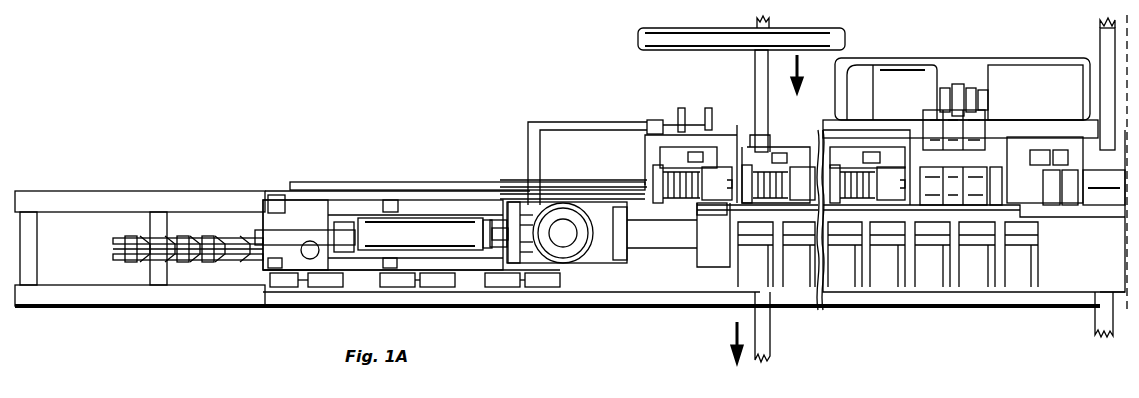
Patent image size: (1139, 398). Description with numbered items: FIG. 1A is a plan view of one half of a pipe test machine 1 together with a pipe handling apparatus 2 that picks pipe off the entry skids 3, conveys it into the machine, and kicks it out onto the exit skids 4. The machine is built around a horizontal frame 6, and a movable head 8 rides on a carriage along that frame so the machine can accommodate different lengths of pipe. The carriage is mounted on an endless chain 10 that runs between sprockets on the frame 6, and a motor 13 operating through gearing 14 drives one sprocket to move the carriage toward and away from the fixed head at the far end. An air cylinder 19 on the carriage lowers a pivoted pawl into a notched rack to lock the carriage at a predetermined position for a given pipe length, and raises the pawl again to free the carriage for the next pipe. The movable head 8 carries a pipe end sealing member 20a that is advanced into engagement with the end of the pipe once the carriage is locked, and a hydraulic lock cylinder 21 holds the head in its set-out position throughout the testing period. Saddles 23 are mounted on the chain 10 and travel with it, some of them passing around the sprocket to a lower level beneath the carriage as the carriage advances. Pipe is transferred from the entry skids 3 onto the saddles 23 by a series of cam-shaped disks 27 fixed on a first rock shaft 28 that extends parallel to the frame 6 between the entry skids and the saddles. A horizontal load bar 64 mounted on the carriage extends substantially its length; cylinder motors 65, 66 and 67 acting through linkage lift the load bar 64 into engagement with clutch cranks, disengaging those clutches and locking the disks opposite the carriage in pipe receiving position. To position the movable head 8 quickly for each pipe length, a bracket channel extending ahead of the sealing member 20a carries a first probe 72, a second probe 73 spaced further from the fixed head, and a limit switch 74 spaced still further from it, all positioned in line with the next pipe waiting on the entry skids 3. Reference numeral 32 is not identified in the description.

The pipe test machine 1 is at (692, 305).
The pipe handling apparatus 2 is at (633, 163).
The entry skids 3 is at (755, 100).
The exit skids 4 is at (770, 337).
The horizontal frame 6 is at (222, 300).
The movable head 8 is at (468, 262).
The endless chain 10 is at (198, 250).
The motor 13 is at (913, 42).
The gearing 14 is at (1028, 70).
The air cylinder 19 is at (304, 260).
The pipe end sealing member 20a is at (640, 248).
The hydraulic lock cylinder 21 is at (440, 218).
The saddles 23 is at (890, 283).
The disks 27 is at (912, 158).
The first rock shaft 28 is at (1117, 185).
The cross bar 32 is at (727, 50).
The horizontal load bar 64 is at (372, 182).
The cylinder motor 65 is at (540, 290).
The cylinder motor 66 is at (425, 288).
The cylinder motor 67 is at (328, 288).
The first probe 72 is at (712, 117).
The second probe 73 is at (679, 108).
The limit switch 74 is at (652, 120).